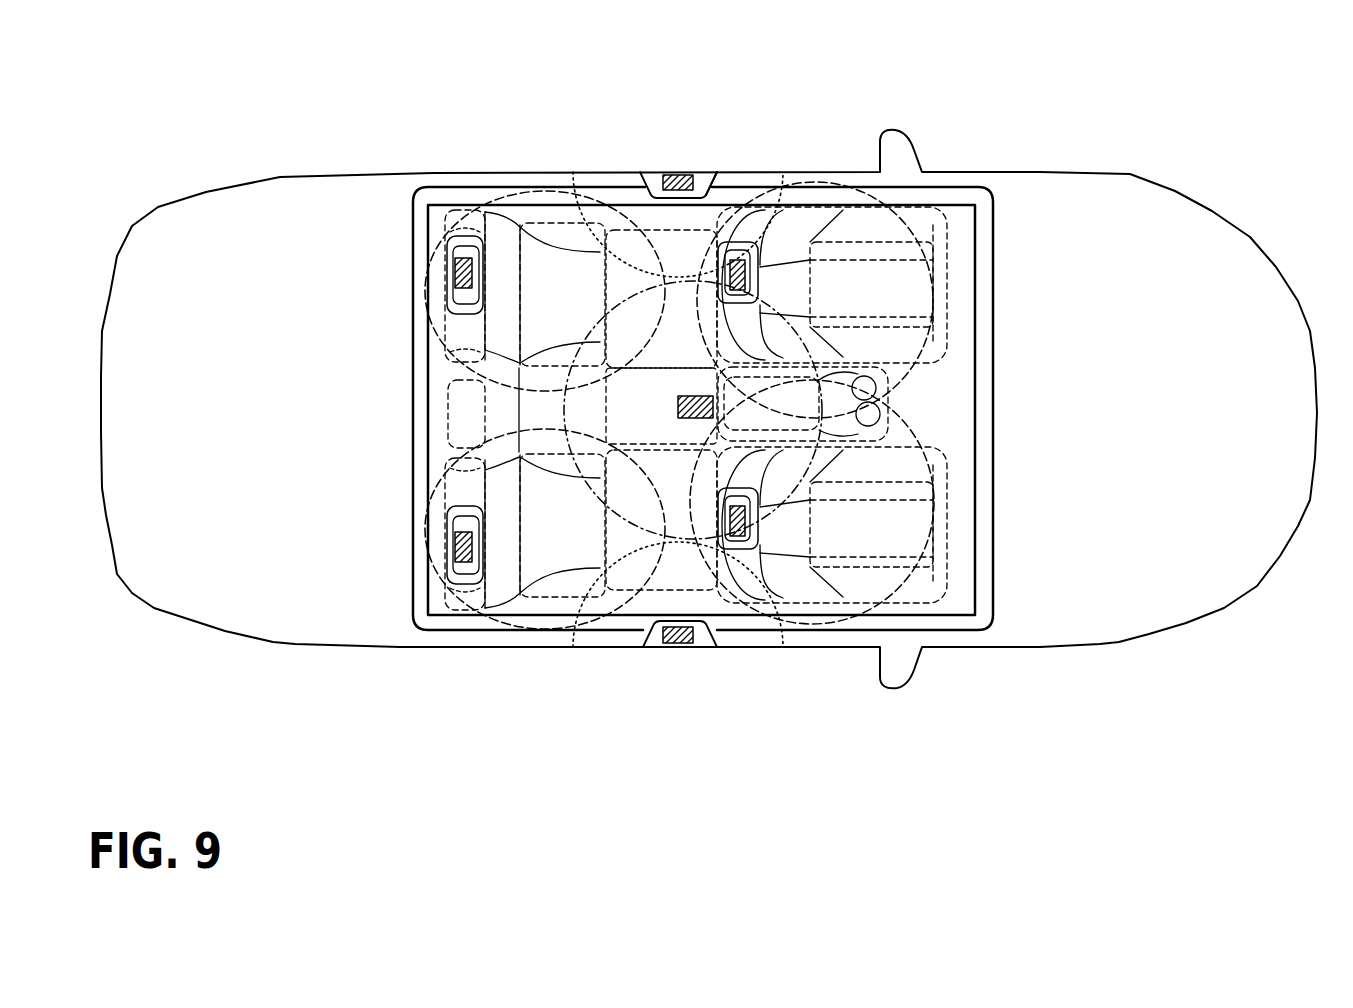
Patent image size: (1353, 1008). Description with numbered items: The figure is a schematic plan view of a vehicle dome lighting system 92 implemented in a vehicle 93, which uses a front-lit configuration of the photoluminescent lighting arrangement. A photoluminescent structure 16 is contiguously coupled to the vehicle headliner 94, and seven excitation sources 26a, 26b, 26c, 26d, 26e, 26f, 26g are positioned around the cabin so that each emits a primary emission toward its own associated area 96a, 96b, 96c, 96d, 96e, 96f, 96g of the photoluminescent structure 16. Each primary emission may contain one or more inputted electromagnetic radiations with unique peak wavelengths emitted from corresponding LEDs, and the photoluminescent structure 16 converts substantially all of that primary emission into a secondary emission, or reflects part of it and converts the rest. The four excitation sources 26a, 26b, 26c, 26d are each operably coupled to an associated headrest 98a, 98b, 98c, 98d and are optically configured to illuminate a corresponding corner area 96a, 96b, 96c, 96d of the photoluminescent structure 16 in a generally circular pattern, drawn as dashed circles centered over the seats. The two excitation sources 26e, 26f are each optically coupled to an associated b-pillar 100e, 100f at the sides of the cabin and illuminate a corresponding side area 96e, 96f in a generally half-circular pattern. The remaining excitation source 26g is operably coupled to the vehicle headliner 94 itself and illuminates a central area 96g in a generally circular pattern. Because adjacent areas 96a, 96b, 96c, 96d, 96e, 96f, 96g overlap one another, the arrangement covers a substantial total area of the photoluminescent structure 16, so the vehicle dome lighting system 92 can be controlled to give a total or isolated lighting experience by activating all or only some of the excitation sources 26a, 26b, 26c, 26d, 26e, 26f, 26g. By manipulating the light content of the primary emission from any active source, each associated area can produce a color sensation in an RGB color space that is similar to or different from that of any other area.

The photoluminescent structure 16 is at (660, 129).
The excitation source 26a is at (460, 545).
The excitation source 26b is at (460, 268).
The excitation source 26c is at (760, 264).
The excitation source 26d is at (901, 604).
The excitation source 26e is at (677, 645).
The excitation source 26f is at (678, 178).
The excitation source 26g is at (713, 402).
The vehicle dome lighting system 92 is at (831, 170).
The vehicle 93 is at (1057, 172).
The vehicle headliner 94 is at (942, 630).
The corner area 96a is at (440, 552).
The corner area 96b is at (495, 190).
The corner area 96c is at (927, 267).
The corner area 96d is at (935, 520).
The side area 96e is at (573, 640).
The side area 96f is at (780, 176).
The central area 96g is at (654, 539).
The headrest 98a is at (370, 622).
The headrest 98b is at (367, 239).
The headrest 98c is at (919, 271).
The headrest 98d is at (902, 595).
The b-pillar 100e is at (707, 690).
The b-pillar 100f is at (717, 184).